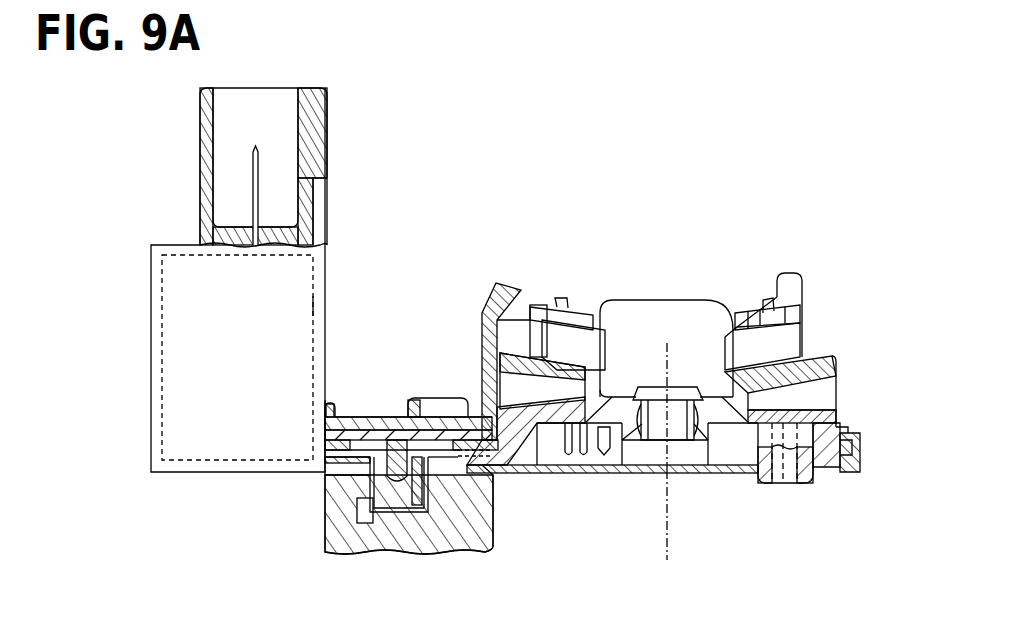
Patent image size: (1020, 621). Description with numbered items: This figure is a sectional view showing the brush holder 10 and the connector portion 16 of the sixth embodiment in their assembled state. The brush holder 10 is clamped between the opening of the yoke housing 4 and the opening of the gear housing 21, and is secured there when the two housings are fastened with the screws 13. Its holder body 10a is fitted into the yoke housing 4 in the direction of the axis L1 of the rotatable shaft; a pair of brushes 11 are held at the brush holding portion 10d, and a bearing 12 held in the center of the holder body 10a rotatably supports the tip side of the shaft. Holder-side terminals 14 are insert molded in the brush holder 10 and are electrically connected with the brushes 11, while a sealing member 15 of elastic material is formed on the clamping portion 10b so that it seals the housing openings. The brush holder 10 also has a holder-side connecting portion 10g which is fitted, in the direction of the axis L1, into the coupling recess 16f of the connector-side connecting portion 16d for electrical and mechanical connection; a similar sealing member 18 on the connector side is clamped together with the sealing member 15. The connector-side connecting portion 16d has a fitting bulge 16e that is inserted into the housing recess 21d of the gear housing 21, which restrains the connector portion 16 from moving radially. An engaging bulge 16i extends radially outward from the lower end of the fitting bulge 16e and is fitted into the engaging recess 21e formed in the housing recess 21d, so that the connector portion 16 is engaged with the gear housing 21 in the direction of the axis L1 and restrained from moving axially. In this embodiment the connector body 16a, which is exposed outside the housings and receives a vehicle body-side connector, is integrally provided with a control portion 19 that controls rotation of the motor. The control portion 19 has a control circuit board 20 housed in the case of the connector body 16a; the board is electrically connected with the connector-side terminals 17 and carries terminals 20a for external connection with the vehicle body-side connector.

The yoke housing 4 is at (482, 320).
The brush holder 10 is at (806, 268).
The holder body 10a is at (818, 352).
The clamping portion 10b is at (846, 428).
The brush holding portion 10d is at (734, 310).
The holder-side connecting portion 10g is at (493, 475).
The brushes 11 is at (552, 304).
The bearing 12 is at (630, 476).
The screws 13 is at (454, 396).
The holder-side terminals 14 is at (484, 512).
The sealing member 15 is at (417, 408).
The connector portion 16 is at (330, 88).
The connector body 16a is at (172, 245).
The connector-side connecting portion 16d is at (492, 544).
The fitting bulge 16e is at (424, 553).
The coupling recess 16f is at (392, 560).
The engaging bulge 16i is at (330, 550).
The connector-side terminals 17 is at (328, 440).
The sealing member 18 is at (358, 415).
The control portion 19 is at (151, 311).
The control circuit board 20 is at (316, 306).
The terminals for external connection 20a is at (258, 148).
The gear housing 21 is at (326, 532).
The housing recess 21d is at (466, 548).
The engaging recess 21e is at (355, 502).
The axis L1 is at (670, 545).